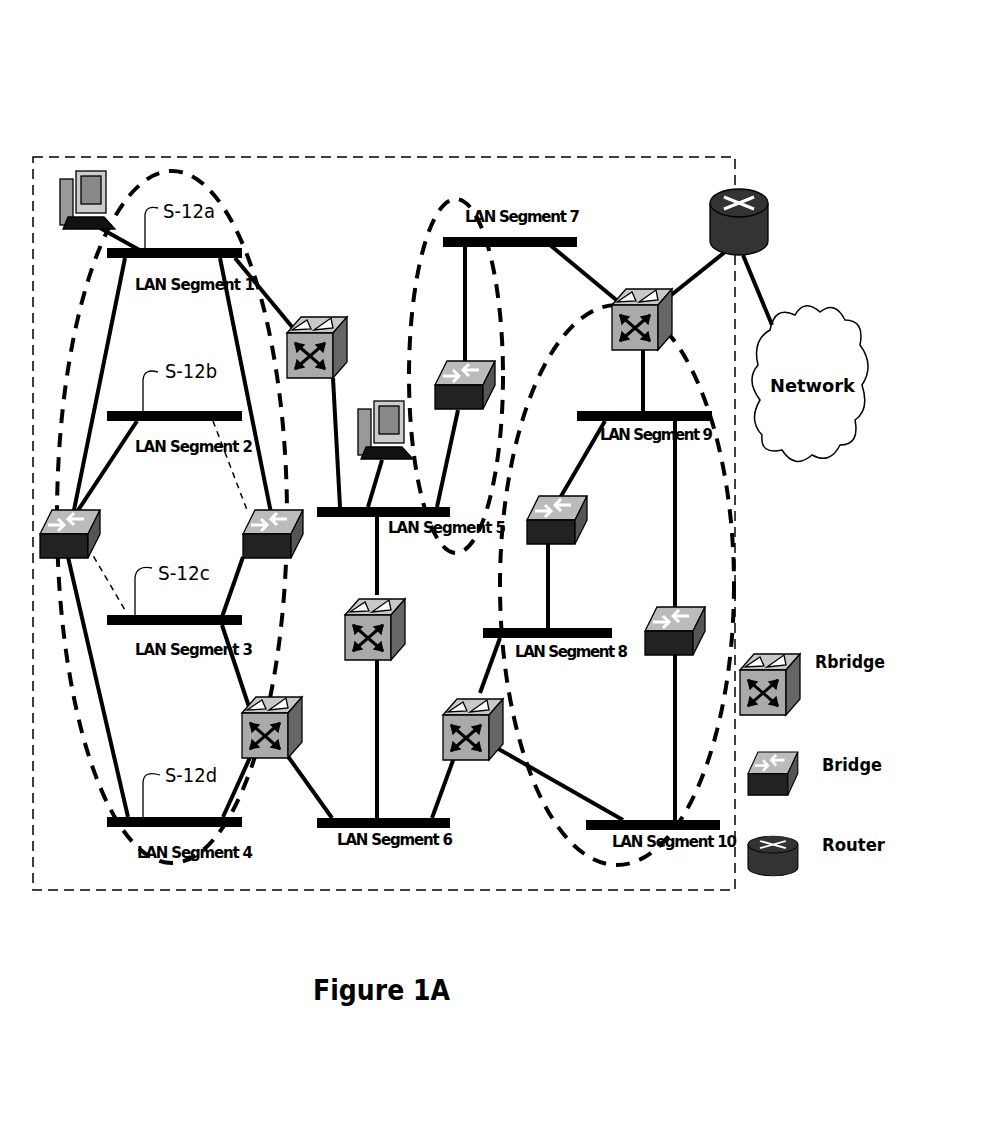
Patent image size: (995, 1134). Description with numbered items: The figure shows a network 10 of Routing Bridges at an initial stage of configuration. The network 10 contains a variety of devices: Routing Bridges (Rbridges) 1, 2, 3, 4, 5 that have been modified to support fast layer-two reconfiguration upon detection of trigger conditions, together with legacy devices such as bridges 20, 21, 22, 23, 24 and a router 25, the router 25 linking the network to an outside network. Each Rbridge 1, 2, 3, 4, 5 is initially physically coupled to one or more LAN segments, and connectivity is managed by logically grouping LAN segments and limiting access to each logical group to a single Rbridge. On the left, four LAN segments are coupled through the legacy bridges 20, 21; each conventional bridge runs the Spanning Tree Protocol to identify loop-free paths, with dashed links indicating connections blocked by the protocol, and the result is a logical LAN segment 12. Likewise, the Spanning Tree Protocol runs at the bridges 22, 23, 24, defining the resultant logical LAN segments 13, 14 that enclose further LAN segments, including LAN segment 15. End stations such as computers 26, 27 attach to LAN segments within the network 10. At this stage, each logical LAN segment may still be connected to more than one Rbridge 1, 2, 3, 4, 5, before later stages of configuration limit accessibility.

The network 10 is at (189, 138).
The logical LAN segment 12 is at (210, 190).
The resultant logical LAN segment 13 is at (425, 232).
The resultant logical LAN segment 14 is at (556, 822).
The LAN segment 6 15 is at (325, 829).
The Routing Bridge 1 is at (293, 375).
The Routing Bridge 2 is at (252, 757).
The Routing Bridge 3 is at (350, 655).
The Routing Bridge 4 is at (660, 285).
The Routing Bridge 5 is at (457, 755).
The legacy bridge 20 is at (93, 537).
The legacy bridge 21 is at (243, 552).
The bridge 22 is at (585, 512).
The bridge 23 is at (645, 645).
The bridge 24 is at (440, 388).
The router 25 is at (773, 157).
The computer 26 is at (43, 128).
The computer 27 is at (375, 401).